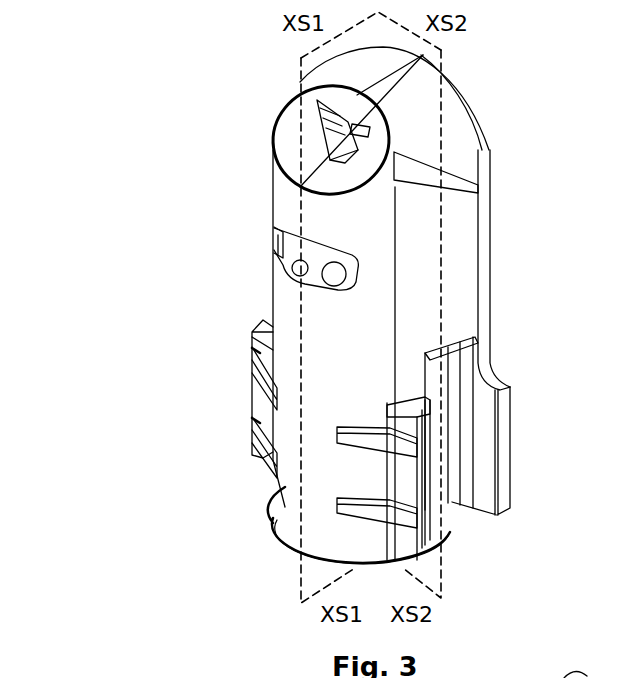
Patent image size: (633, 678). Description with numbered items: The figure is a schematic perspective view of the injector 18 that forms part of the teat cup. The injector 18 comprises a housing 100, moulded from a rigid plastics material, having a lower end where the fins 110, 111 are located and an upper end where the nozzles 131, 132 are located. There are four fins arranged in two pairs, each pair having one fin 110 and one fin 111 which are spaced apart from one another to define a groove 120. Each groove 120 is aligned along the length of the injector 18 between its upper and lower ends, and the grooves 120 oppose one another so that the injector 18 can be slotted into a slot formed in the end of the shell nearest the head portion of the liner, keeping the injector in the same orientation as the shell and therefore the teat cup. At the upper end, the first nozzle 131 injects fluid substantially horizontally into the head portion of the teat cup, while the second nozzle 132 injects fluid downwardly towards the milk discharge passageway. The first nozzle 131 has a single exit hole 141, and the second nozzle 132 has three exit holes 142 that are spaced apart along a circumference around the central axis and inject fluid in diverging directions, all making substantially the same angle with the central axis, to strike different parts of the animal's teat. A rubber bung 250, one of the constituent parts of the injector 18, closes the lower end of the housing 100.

The injector 18 is at (110, 120).
The housing 100 is at (453, 258).
The fin 110 is at (263, 405).
The fin 111 is at (503, 430).
The groove 120 is at (437, 490).
The first nozzle 131 is at (322, 132).
The second nozzle 132 is at (300, 268).
The exit hole 141 is at (335, 130).
The exit holes 142 is at (278, 245).
The bung 250 is at (330, 538).